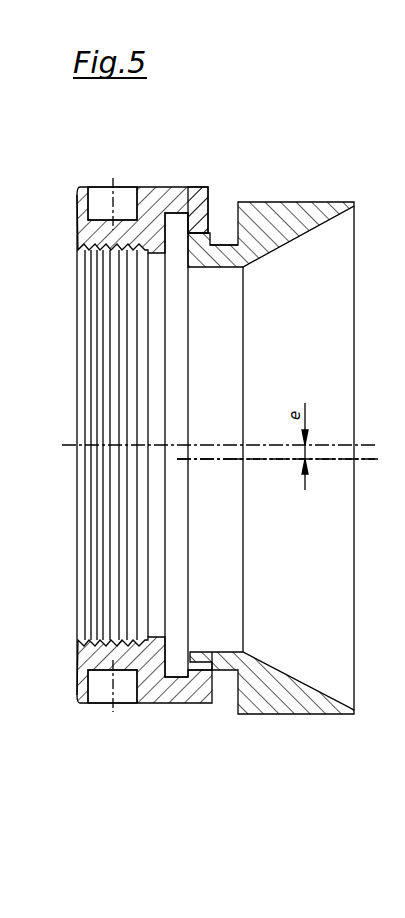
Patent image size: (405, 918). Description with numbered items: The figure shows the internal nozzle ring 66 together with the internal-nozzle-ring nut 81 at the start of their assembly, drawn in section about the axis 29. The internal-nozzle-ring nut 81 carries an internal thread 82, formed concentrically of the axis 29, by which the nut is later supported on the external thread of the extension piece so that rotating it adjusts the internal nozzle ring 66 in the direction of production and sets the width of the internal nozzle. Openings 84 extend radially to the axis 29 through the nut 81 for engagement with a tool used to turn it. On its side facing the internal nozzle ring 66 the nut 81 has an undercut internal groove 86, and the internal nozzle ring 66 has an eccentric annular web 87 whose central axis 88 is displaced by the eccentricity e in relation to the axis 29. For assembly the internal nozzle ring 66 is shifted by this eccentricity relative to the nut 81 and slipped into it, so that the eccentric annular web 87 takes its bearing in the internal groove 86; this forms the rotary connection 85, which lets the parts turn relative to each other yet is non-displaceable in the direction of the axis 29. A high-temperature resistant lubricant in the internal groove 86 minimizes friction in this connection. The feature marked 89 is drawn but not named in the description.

The internal-nozzle-ring nut 81 is at (141, 698).
The internal thread 82 is at (106, 636).
The openings 84 is at (118, 212).
The rotary connection 85 is at (207, 706).
The undercut internal groove 86 is at (175, 655).
The eccentric annular web 87 is at (200, 230).
The central axis 88 is at (332, 460).
The clearance 89 is at (217, 636).
The axis 29 is at (260, 445).
The internal nozzle ring 66 is at (268, 232).